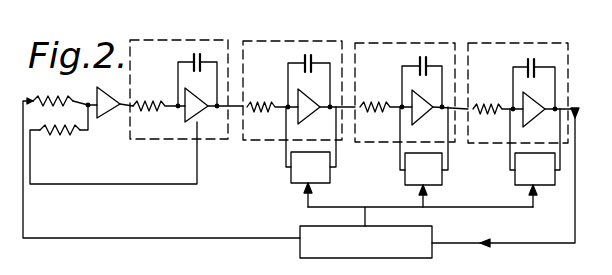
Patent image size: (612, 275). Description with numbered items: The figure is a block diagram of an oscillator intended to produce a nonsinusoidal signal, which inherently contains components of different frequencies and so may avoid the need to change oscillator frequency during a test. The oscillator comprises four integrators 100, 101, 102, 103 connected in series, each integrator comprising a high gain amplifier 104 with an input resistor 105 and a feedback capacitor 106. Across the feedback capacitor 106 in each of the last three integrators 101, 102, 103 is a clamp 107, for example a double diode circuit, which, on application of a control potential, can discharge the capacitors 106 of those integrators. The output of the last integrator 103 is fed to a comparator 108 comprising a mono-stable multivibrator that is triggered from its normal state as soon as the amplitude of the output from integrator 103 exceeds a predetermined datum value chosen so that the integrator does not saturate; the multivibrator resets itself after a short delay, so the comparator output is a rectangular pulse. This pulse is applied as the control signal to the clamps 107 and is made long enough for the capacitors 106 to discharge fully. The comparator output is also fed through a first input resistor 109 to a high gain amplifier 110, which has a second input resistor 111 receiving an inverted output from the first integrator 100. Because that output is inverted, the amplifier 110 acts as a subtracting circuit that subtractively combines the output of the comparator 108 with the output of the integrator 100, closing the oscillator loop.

The integrator 100 is at (140, 40).
The integrator 101 is at (288, 41).
The integrator 102 is at (407, 43).
The integrator 103 is at (522, 43).
The high gain amplifier 104 is at (188, 115).
The input resistor 105 is at (155, 109).
The feedback capacitor 106 is at (198, 53).
The clamp 107 is at (291, 178).
The comparator 108 is at (423, 236).
The first input resistor 109 is at (52, 98).
The high gain amplifier 110 is at (109, 86).
The second input resistor 111 is at (113, 144).